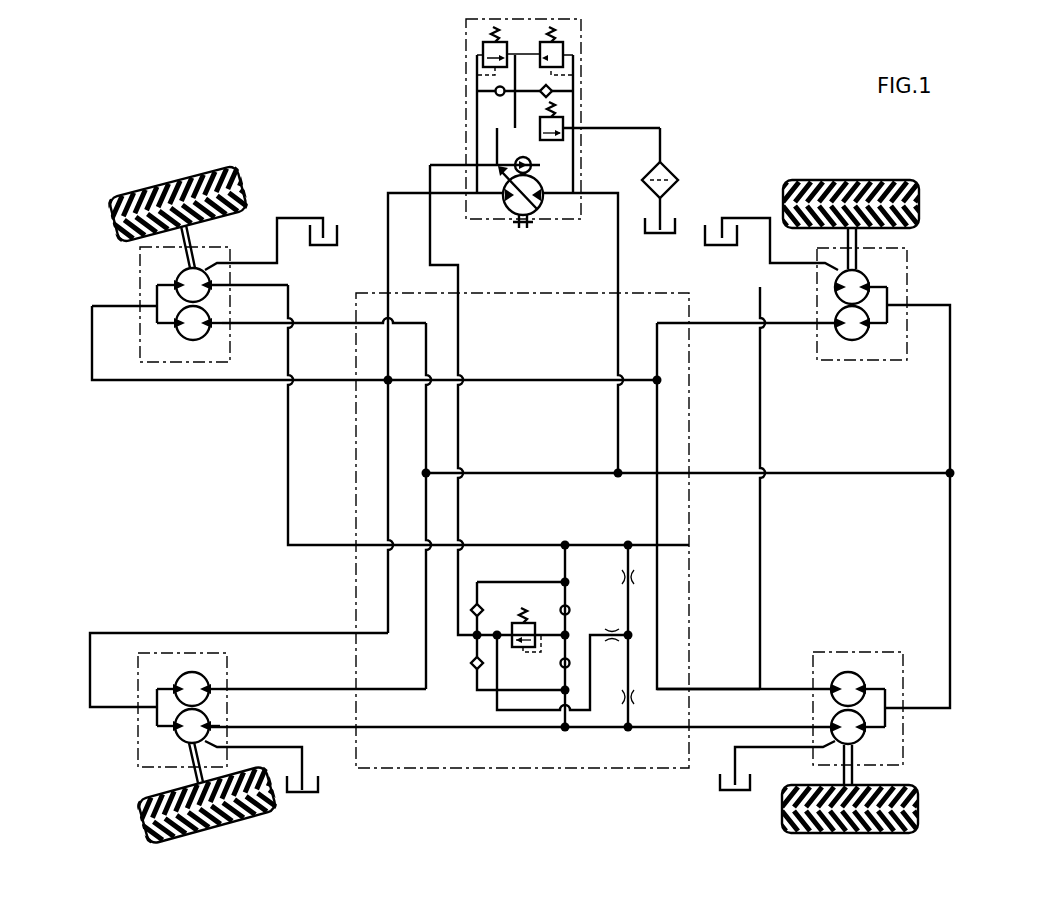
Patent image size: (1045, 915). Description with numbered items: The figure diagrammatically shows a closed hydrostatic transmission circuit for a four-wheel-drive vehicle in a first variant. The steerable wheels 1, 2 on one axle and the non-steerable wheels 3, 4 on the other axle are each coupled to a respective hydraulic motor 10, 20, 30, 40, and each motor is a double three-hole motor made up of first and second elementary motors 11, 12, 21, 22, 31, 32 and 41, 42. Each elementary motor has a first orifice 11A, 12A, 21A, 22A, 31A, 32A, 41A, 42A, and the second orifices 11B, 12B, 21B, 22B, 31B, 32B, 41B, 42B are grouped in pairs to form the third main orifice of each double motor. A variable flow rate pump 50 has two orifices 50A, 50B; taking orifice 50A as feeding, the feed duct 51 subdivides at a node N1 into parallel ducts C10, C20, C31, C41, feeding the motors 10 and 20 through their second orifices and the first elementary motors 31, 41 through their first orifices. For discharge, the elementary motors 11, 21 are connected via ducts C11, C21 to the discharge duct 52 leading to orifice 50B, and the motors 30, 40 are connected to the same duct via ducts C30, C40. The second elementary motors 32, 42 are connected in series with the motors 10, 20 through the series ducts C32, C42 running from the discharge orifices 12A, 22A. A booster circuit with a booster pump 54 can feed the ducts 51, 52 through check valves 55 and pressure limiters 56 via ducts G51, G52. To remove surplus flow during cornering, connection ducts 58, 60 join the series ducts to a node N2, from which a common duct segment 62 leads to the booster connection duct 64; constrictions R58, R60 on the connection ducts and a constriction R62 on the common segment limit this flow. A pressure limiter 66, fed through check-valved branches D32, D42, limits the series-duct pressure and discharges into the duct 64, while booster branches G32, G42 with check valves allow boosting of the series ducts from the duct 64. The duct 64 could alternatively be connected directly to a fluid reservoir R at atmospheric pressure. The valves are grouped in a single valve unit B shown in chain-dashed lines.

The steerable driving wheel 1 is at (162, 186).
The steerable driving wheel 2 is at (235, 824).
The non-steerable driving wheel 3 is at (845, 180).
The non-steerable driving wheel 4 is at (918, 800).
The hydraulic motor 10 is at (140, 290).
The first elementary motor 11 is at (196, 344).
The second elementary motor 12 is at (202, 274).
The first orifice of elementary motor 11 11A is at (211, 328).
The second orifice of elementary motor 11 11B is at (176, 326).
The first orifice of elementary motor 12 12A is at (212, 288).
The second orifice of elementary motor 12 12B is at (170, 280).
The hydraulic motor 20 is at (138, 722).
The first elementary motor 21 is at (192, 682).
The second elementary motor 22 is at (187, 738).
The first orifice of elementary motor 21 21A is at (212, 684).
The second orifice of elementary motor 21 21B is at (174, 682).
The first orifice of elementary motor 22 22A is at (212, 722).
The second orifice of elementary motor 22 22B is at (166, 733).
The hydraulic motor 30 is at (902, 262).
The first elementary motor 31 is at (847, 335).
The second elementary motor 32 is at (858, 272).
The first orifice of elementary motor 31 31A is at (834, 329).
The second orifice of elementary motor 31 31B is at (869, 326).
The first orifice of elementary motor 32 32A is at (835, 288).
The second orifice of elementary motor 32 32B is at (874, 287).
The hydraulic motor 40 is at (814, 652).
The first elementary motor 41 is at (850, 682).
The second elementary motor 42 is at (861, 736).
The first orifice of elementary motor 41 41A is at (832, 688).
The second orifice of elementary motor 41 41B is at (866, 684).
The first orifice of elementary motor 42 42A is at (832, 727).
The second orifice of elementary motor 42 42B is at (867, 732).
The variable flow rate pump 50 is at (525, 216).
The pump orifice 50A is at (506, 208).
The pump orifice 50B is at (556, 206).
The feed duct 51 is at (404, 190).
The discharge duct 52 is at (618, 263).
The booster pump 54 is at (530, 164).
The check valves 55 is at (498, 91).
The pressure limiters 56 is at (484, 54).
The connection duct 58 is at (627, 604).
The connection duct 60 is at (655, 678).
The common duct segment 62 is at (599, 714).
The booster connection duct 64 is at (458, 414).
The pressure limiter 66 is at (511, 628).
The valve unit B is at (448, 768).
The fluid reservoir R is at (680, 224).
The parallel duct C10 is at (253, 382).
The duct C11 is at (330, 322).
The parallel duct C20 is at (300, 633).
The duct C21 is at (308, 689).
The duct C30 is at (950, 412).
The parallel duct C31 is at (724, 321).
The series duct C32 is at (520, 542).
The duct C40 is at (950, 557).
The parallel duct C41 is at (676, 410).
The series duct C42 is at (464, 727).
The branch D32 is at (568, 562).
The branch D42 is at (562, 680).
The booster branch G32 is at (510, 582).
The booster branch G42 is at (475, 682).
The booster duct G51 is at (466, 133).
The booster duct G52 is at (581, 105).
The node N1 is at (388, 380).
The node N2 is at (636, 636).
The constriction R58 is at (640, 576).
The constriction R60 is at (634, 700).
The constriction R62 is at (618, 644).